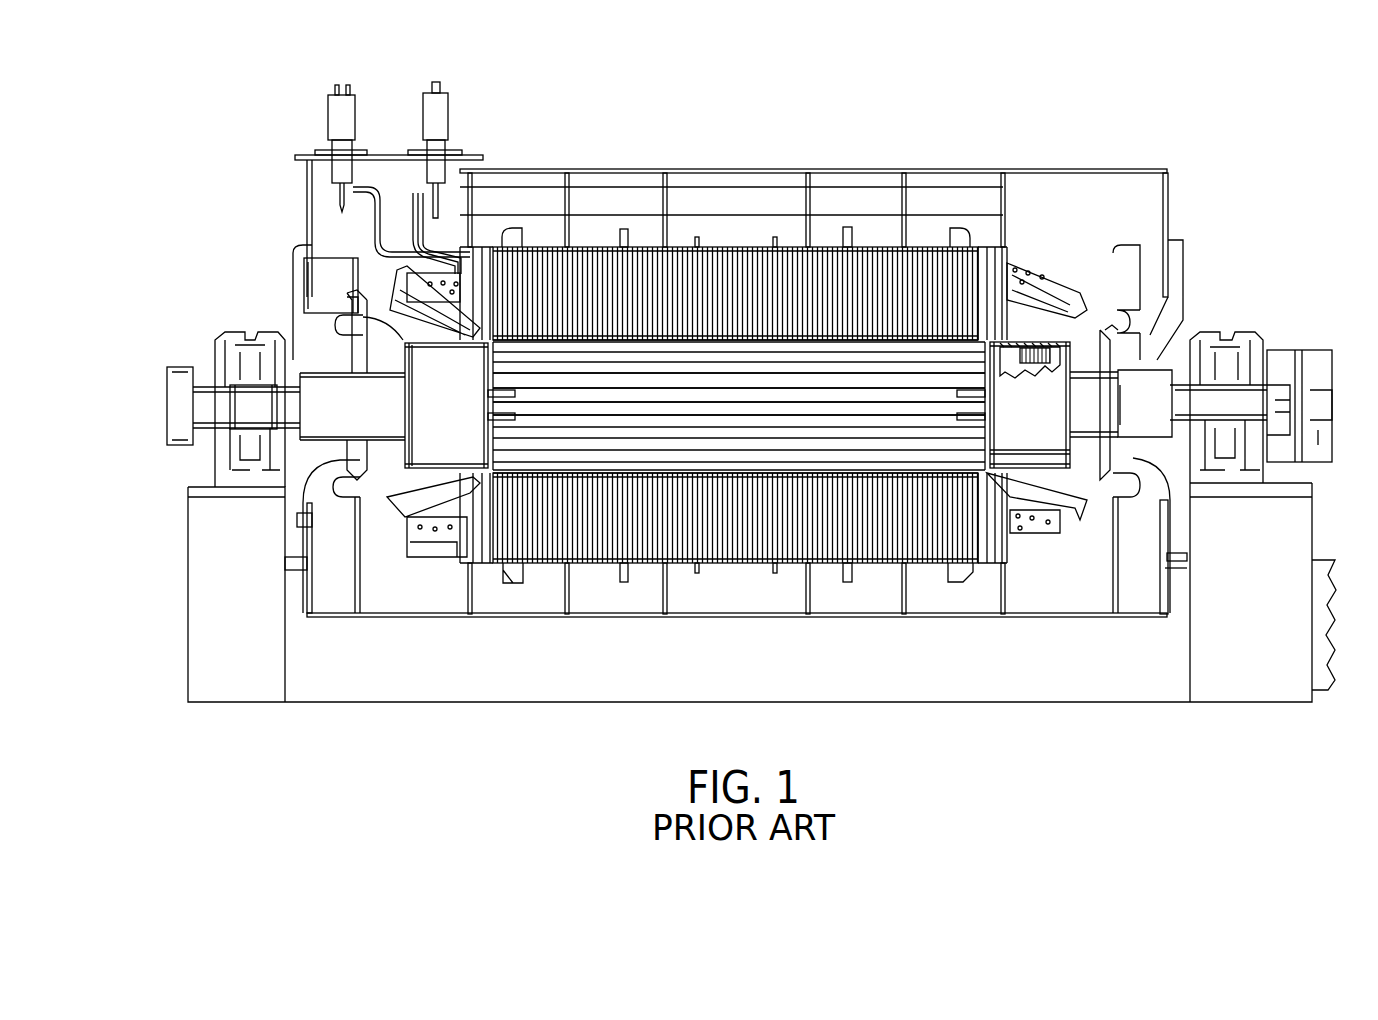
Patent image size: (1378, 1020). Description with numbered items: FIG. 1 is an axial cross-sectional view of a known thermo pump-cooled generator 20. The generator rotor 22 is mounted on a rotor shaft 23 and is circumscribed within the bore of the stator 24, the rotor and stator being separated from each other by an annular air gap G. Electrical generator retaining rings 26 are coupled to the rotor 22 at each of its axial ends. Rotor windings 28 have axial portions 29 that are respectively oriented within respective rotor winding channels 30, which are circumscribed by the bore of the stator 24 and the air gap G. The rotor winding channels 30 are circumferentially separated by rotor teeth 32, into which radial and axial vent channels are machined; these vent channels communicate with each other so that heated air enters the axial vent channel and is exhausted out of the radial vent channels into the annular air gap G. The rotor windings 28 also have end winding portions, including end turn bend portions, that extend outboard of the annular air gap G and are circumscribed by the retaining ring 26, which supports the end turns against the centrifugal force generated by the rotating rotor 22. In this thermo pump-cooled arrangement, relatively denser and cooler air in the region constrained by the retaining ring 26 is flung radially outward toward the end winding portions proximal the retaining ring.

The thermo pump-cooled generator 20 is at (1147, 113).
The generator rotor 22 is at (667, 390).
The rotor shaft 23 is at (1093, 407).
The stator 24 is at (567, 300).
The retaining ring 26 is at (440, 380).
The rotor winding 28 is at (903, 395).
The axial portion 29 is at (880, 373).
The rotor winding channel 30 is at (903, 395).
The rotor tooth 32 is at (897, 380).
The annular air gap G is at (807, 345).